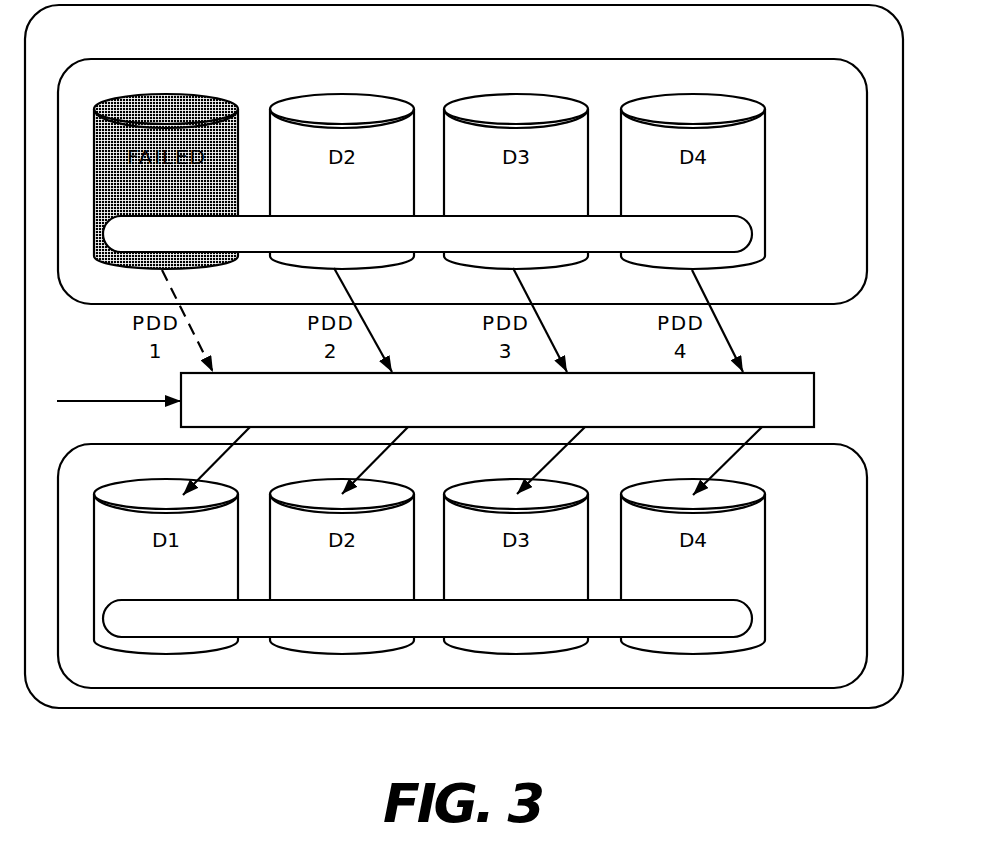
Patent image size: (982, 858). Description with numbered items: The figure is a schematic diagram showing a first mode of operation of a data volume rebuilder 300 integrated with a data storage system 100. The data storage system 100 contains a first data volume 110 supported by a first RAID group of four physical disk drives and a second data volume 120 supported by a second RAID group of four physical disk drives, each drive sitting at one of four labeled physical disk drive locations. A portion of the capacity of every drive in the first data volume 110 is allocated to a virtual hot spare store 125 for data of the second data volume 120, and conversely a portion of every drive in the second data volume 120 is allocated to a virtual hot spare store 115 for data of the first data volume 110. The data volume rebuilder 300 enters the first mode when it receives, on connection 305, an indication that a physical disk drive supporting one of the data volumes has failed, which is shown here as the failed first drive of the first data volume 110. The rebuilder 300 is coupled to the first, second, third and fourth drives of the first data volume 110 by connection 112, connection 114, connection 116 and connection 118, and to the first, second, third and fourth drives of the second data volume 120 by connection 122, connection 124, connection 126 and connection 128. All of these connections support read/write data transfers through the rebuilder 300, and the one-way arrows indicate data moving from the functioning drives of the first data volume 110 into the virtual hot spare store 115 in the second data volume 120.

The data storage system 100 is at (869, 34).
The first data volume 110 is at (843, 103).
The second data volume 120 is at (845, 676).
The virtual hot spare store 125 is at (710, 244).
The virtual hot spare store 115 is at (712, 629).
The data volume rebuilder 300 is at (763, 402).
The connection 305 is at (77, 393).
The connection 112 is at (197, 334).
The connection 114 is at (377, 335).
The connection 116 is at (550, 335).
The connection 118 is at (728, 336).
The connection 122 is at (225, 457).
The connection 124 is at (383, 455).
The connection 126 is at (560, 455).
The connection 128 is at (737, 455).